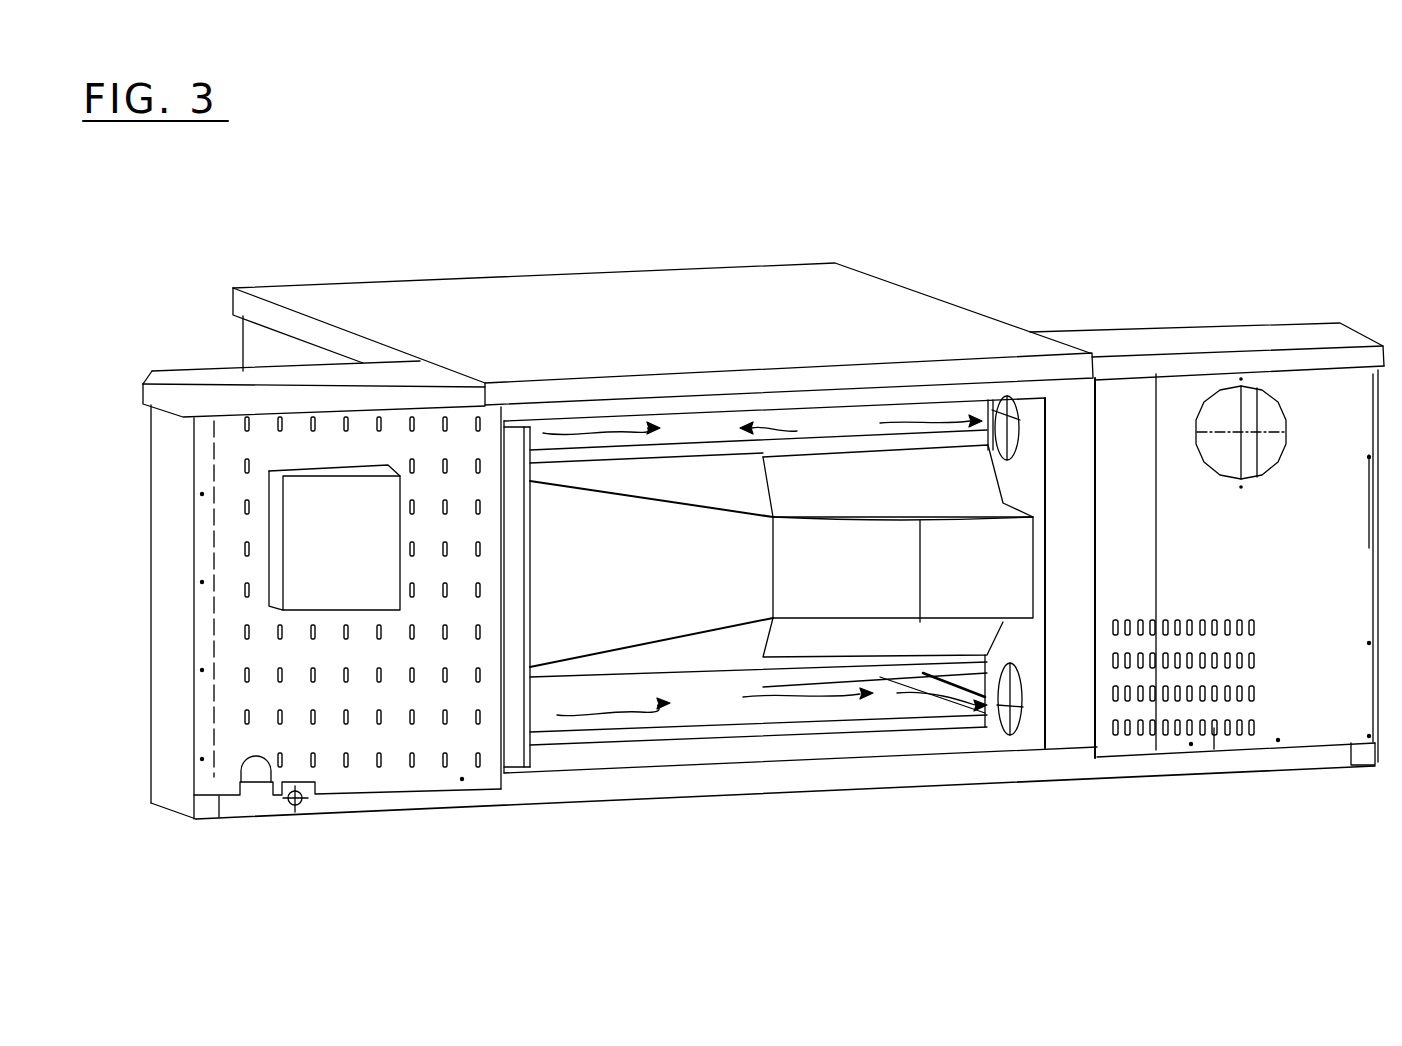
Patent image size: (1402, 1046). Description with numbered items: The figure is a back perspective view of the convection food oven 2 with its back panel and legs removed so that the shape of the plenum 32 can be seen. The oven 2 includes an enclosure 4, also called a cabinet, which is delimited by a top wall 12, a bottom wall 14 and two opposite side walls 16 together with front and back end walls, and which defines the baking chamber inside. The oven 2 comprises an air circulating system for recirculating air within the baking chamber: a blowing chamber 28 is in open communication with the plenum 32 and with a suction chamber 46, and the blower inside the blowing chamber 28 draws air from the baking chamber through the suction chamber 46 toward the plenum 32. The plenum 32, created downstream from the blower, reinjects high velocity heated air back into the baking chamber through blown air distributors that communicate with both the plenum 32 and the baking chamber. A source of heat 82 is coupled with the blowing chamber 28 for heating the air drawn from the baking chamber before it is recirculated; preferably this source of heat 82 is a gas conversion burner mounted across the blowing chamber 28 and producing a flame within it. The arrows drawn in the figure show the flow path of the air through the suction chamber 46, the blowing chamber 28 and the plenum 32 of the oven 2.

The convection food oven 2 is at (800, 142).
The enclosure 4 is at (587, 303).
The top wall 12 is at (747, 297).
The bottom wall 14 is at (773, 783).
The side walls 16 is at (247, 358).
The blowing chamber 28 is at (963, 403).
The plenum 32 is at (671, 579).
The suction chamber 46 is at (810, 407).
The source of heat 82 is at (297, 533).